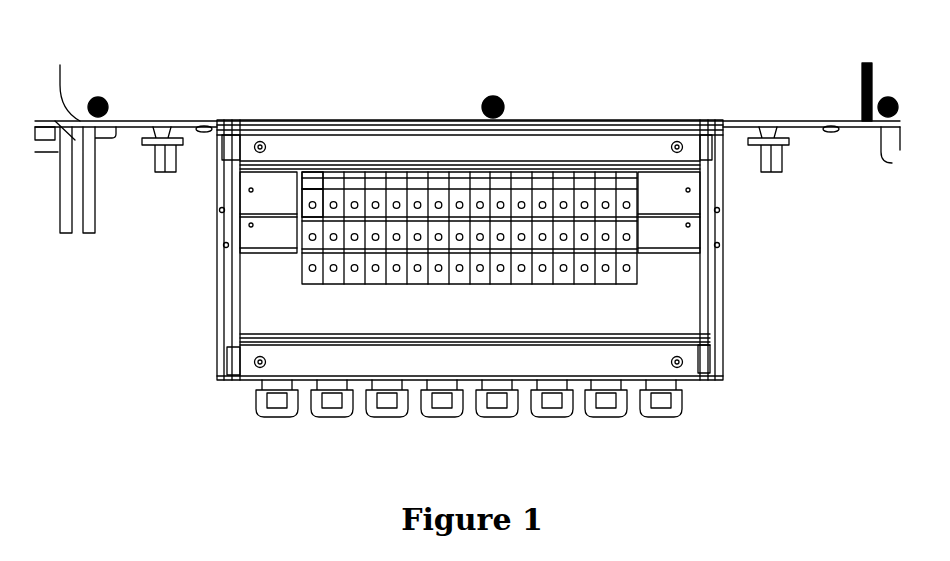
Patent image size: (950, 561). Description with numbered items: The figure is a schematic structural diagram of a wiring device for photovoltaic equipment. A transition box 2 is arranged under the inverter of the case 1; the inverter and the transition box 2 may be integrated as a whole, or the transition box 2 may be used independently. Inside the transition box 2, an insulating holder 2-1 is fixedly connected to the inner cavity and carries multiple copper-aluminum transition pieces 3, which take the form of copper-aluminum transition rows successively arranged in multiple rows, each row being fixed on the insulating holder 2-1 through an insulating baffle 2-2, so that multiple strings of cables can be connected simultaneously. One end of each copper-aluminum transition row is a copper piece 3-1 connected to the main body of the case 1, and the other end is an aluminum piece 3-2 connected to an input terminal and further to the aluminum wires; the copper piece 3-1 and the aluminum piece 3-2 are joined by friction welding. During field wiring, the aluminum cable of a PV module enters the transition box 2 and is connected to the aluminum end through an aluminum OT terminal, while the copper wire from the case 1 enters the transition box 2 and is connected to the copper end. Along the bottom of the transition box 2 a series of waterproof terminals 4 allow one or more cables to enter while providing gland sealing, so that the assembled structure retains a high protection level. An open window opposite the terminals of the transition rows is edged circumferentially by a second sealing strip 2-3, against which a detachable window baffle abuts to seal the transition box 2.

The case 1 is at (802, 102).
The transition box 2 is at (713, 365).
The insulating holder 2-1 is at (652, 187).
The insulating baffle 2-2 is at (525, 190).
The second sealing strip 2-3 is at (553, 342).
The copper-aluminum transition piece 3 is at (630, 263).
The copper piece 3-1 is at (312, 177).
The aluminum piece 3-2 is at (312, 203).
The waterproof terminal 4 is at (277, 408).